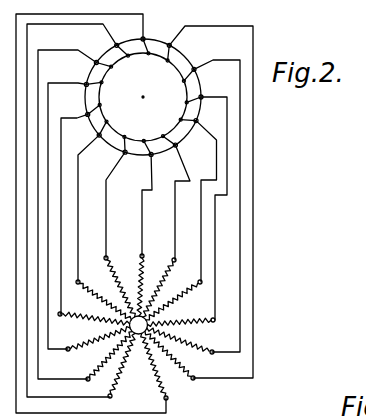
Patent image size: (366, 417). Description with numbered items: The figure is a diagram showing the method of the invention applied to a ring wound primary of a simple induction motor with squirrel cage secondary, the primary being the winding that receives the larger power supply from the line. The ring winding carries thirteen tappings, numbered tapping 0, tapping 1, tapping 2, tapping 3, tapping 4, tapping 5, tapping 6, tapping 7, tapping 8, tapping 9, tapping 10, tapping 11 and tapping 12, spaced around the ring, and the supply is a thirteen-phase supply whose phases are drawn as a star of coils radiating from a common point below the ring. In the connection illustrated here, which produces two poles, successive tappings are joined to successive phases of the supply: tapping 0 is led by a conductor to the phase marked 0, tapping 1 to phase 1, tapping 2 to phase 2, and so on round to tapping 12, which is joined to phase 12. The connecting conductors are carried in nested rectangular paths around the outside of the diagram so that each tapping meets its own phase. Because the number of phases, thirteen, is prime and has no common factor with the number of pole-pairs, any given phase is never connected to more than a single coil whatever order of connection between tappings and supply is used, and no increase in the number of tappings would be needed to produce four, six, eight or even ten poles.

The tapping 0 is at (92, 213).
The tapping 1 is at (81, 211).
The tapping 2 is at (85, 215).
The tapping 3 is at (89, 216).
The tapping 4 is at (94, 215).
The tapping 5 is at (103, 220).
The tapping 6 is at (119, 226).
The tapping 7 is at (150, 228).
The tapping 8 is at (166, 226).
The tapping 9 is at (181, 217).
The tapping 10 is at (188, 209).
The tapping 11 is at (193, 210).
The tapping 12 is at (199, 213).